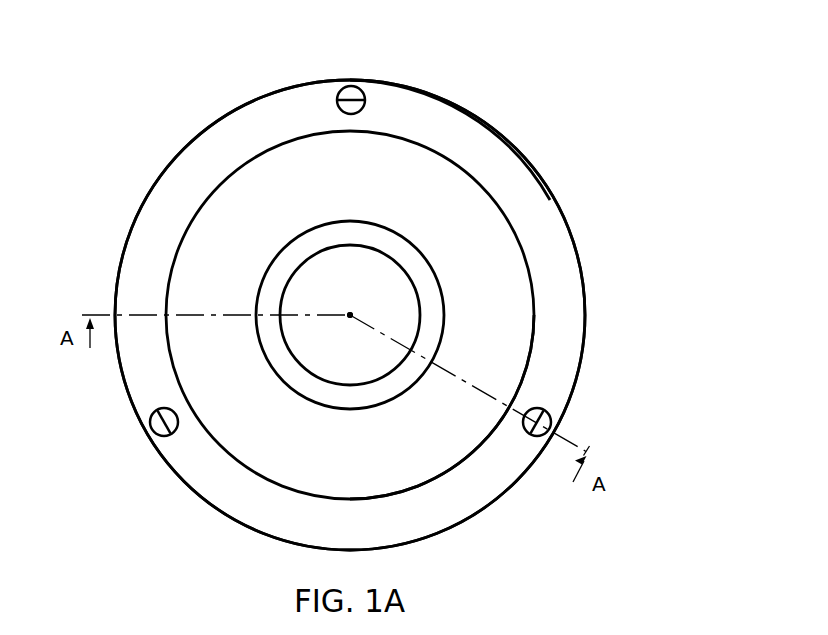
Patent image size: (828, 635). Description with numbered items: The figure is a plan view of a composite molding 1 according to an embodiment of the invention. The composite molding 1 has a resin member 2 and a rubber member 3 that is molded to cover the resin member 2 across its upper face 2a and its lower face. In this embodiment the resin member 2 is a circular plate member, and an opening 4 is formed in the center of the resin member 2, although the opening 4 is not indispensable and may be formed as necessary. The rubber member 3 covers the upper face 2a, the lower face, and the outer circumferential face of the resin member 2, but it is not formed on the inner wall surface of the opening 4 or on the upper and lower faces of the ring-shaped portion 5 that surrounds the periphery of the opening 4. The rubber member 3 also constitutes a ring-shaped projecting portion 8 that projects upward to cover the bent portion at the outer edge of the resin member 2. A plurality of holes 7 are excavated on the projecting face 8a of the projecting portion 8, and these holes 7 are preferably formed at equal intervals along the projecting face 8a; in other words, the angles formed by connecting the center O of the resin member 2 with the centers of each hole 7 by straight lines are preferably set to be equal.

The composite molding 1 is at (615, 133).
The resin member 2 is at (288, 252).
The upper face 2a is at (568, 315).
The rubber member 3 is at (565, 352).
The opening 4 is at (355, 293).
The ring-shaped portion 5 is at (270, 303).
The holes 7 is at (350, 86).
The projecting portion 8 is at (568, 222).
The projecting face 8a is at (495, 143).
The center O is at (352, 314).